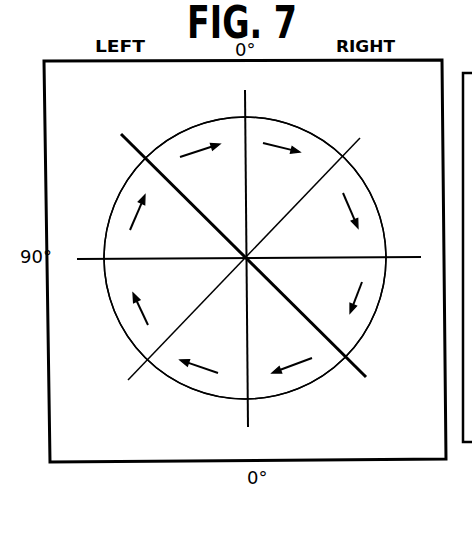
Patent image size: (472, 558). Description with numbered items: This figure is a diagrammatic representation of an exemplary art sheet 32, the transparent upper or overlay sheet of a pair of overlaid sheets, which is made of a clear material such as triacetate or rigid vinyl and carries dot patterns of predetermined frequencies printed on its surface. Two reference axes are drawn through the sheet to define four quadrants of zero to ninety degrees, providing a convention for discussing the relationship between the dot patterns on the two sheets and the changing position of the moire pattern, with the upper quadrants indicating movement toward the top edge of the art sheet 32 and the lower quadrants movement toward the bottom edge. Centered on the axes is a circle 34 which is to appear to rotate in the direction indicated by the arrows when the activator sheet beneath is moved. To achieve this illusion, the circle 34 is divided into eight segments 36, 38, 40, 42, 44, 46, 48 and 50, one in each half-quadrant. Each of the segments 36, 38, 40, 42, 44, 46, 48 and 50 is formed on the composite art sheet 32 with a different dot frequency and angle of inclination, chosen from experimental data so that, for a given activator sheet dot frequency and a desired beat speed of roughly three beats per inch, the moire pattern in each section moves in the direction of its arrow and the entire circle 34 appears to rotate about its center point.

The art sheet 32 is at (127, 462).
The circle 34 is at (213, 397).
The segment 36 is at (282, 129).
The segment 38 is at (362, 193).
The segment 40 is at (370, 300).
The segment 42 is at (308, 373).
The segment 44 is at (191, 378).
The segment 46 is at (118, 306).
The segment 48 is at (128, 184).
The segment 50 is at (211, 125).